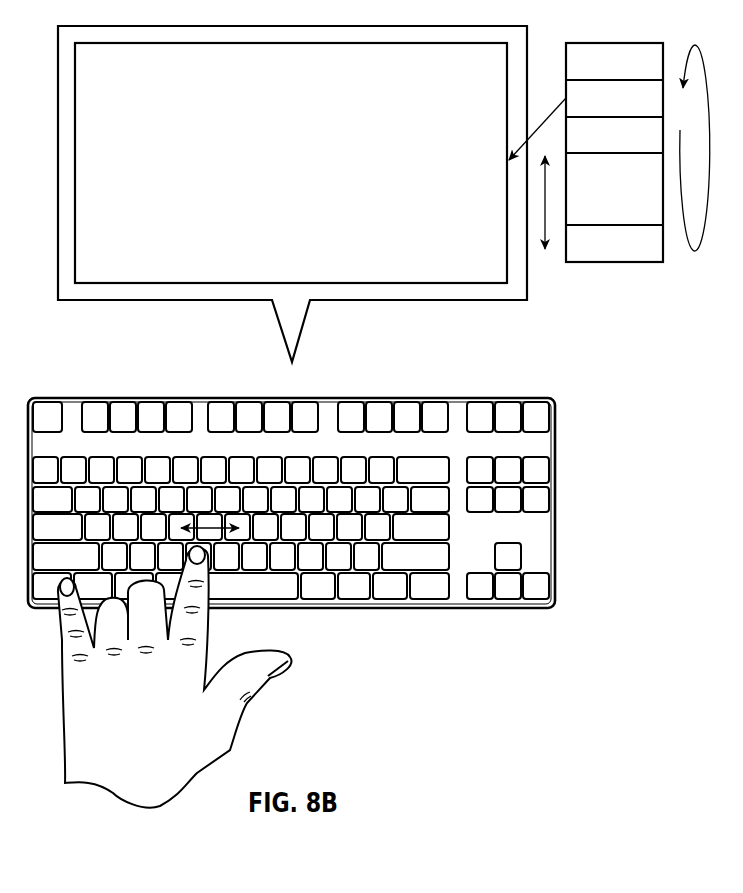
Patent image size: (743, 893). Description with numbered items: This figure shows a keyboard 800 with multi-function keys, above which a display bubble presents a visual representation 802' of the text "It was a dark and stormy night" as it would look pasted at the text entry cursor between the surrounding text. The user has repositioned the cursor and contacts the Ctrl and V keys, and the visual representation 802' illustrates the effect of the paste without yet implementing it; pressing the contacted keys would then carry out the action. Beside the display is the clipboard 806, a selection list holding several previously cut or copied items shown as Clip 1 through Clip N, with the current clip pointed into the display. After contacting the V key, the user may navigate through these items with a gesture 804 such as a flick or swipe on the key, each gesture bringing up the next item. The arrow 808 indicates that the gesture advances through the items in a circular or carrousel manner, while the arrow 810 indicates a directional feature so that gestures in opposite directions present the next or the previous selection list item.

The keyboard 800 is at (494, 357).
The visual representation 802' is at (292, 194).
The gesture 804 is at (212, 520).
The clipboard 806 is at (604, 37).
The arrow indicating circular navigation 808 is at (690, 268).
The arrow indicating directional navigation 810 is at (551, 265).